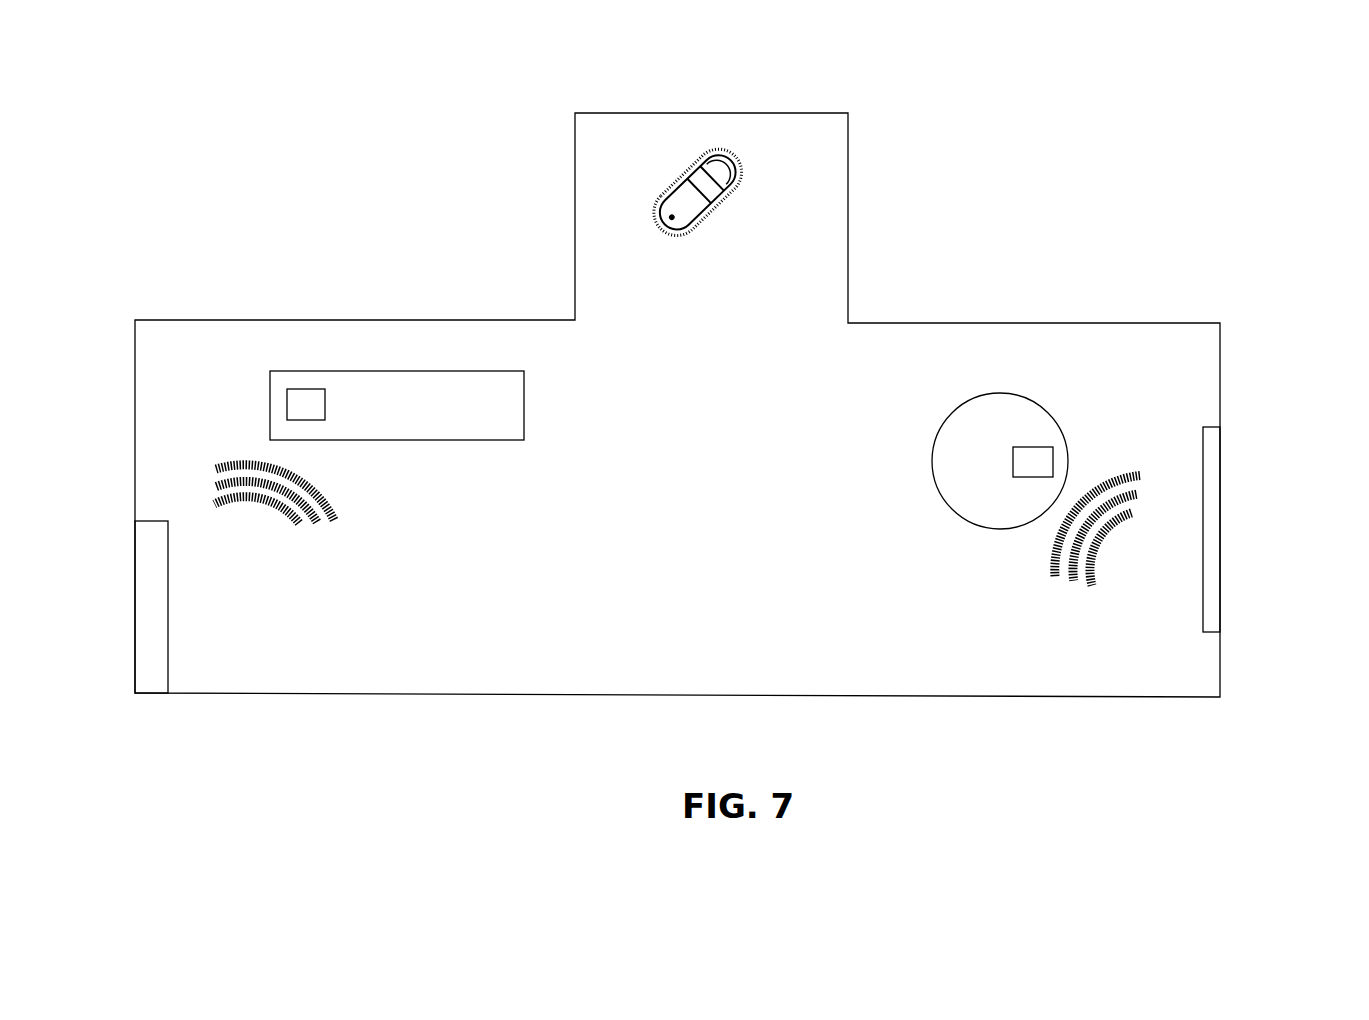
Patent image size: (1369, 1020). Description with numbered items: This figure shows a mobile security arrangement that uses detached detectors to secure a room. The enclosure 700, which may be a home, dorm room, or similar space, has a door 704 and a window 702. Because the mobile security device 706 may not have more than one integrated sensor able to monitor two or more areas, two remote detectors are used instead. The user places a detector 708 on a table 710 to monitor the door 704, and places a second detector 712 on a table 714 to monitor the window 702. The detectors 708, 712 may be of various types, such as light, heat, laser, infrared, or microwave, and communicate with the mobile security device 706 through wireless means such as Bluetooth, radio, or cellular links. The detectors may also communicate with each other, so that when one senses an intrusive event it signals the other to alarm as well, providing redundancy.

The enclosure 700 is at (848, 116).
The window 702 is at (1220, 518).
The door 704 is at (168, 628).
The mobile security device 706 is at (665, 207).
The detector 708 is at (305, 388).
The table 710 is at (526, 428).
The detector 712 is at (1033, 449).
The table 714 is at (1000, 393).